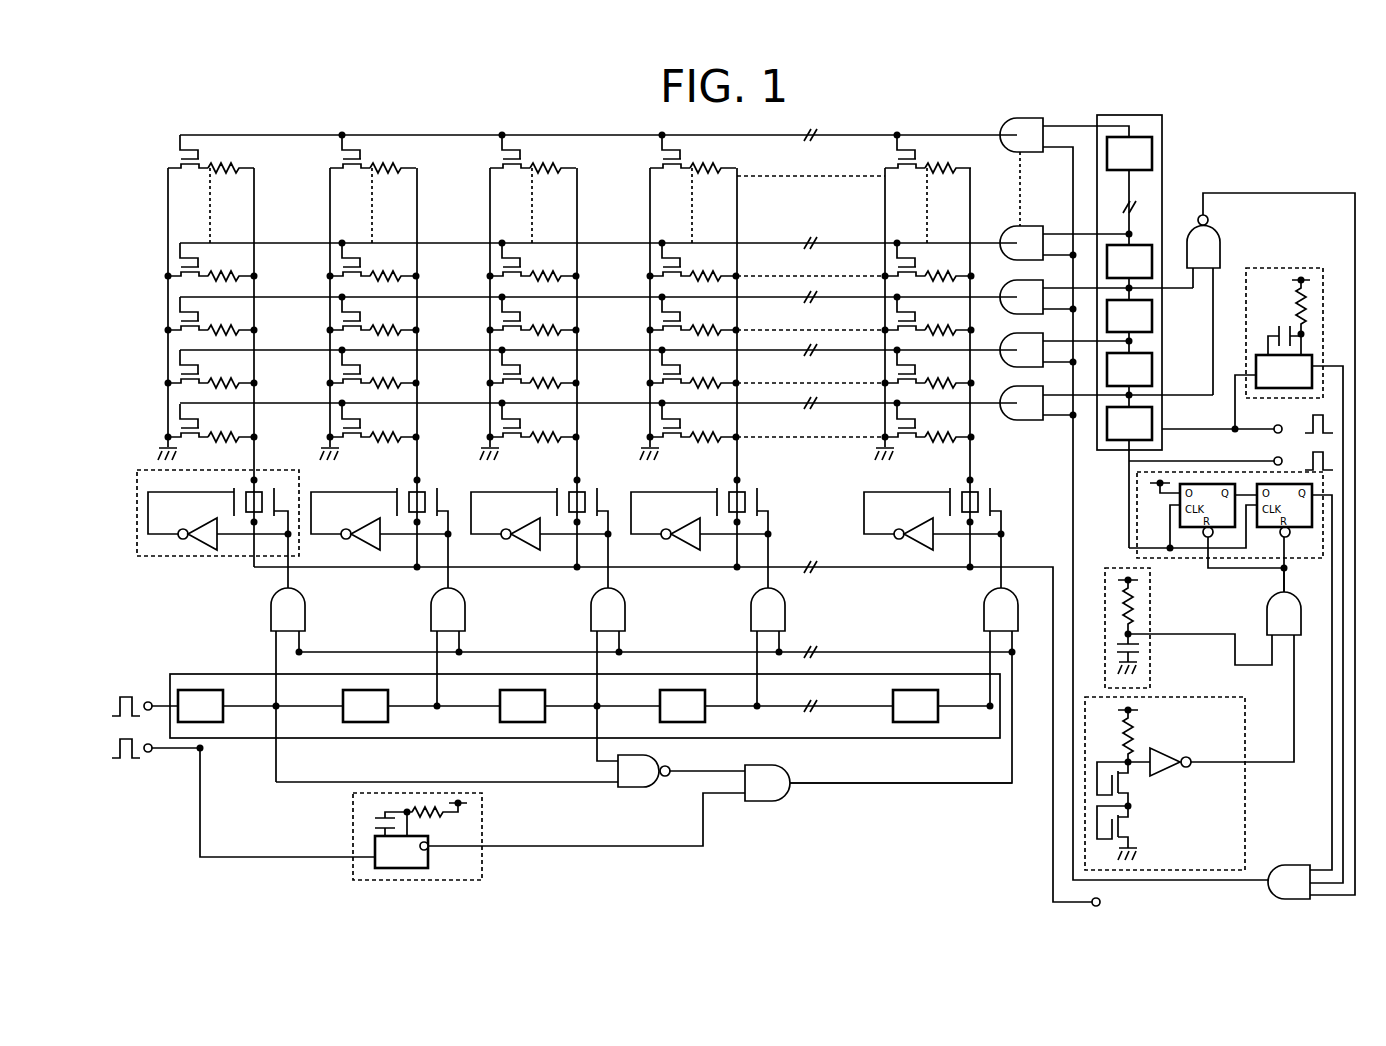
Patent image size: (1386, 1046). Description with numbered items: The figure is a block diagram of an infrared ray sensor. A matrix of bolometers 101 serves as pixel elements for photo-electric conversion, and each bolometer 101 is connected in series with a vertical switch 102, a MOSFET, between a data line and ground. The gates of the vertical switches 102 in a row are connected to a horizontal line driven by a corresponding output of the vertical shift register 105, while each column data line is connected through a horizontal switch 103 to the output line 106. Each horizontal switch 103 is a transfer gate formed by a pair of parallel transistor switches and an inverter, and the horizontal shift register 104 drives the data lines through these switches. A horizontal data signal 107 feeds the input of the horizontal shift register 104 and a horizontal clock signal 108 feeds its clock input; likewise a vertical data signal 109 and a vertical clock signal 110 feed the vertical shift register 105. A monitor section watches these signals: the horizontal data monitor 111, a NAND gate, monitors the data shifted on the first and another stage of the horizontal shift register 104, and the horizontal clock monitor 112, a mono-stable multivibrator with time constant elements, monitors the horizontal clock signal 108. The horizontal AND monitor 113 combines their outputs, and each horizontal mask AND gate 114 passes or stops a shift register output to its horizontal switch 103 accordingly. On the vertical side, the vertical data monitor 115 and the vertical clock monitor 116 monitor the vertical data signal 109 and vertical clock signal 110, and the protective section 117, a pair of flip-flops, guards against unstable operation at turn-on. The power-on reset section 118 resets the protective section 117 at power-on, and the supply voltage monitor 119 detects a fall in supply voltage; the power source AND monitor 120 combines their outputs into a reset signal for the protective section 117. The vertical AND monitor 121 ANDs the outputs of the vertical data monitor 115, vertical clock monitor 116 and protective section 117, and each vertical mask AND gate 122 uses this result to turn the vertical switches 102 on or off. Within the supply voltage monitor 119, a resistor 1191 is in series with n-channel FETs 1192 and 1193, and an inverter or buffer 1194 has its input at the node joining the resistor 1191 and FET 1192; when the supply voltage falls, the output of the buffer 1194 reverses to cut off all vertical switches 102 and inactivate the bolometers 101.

The bolometer 101 is at (230, 159).
The vertical switch 102 is at (181, 142).
The horizontal switch 103 is at (159, 558).
The horizontal shift register 104 is at (198, 674).
The vertical shift register 105 is at (1165, 158).
The output line 106 is at (1102, 902).
The horizontal data signal 107 is at (128, 692).
The horizontal clock signal 108 is at (126, 765).
The vertical data signal 109 is at (1298, 469).
The vertical clock signal 110 is at (1298, 432).
The horizontal data monitor 111 is at (640, 790).
The horizontal clock monitor 112 is at (486, 822).
The horizontal AND monitor 113 is at (770, 806).
The horizontal mask AND gate 114 is at (270, 608).
The vertical data monitor 115 is at (1222, 242).
The vertical clock monitor 116 is at (1312, 268).
The protective section 117 is at (1168, 560).
The power-on reset section 118 is at (1152, 668).
The supply voltage monitor 119 is at (1200, 783).
The power source AND monitor 120 is at (1266, 611).
The vertical AND monitor 121 is at (1288, 864).
The vertical mask AND gate 122 is at (1020, 425).
The resistor 1191 is at (1137, 733).
The n-channel field effect transistor 1192 is at (1130, 787).
The n-channel field effect transistor 1193 is at (1130, 832).
The inverter or buffer 1194 is at (1204, 743).